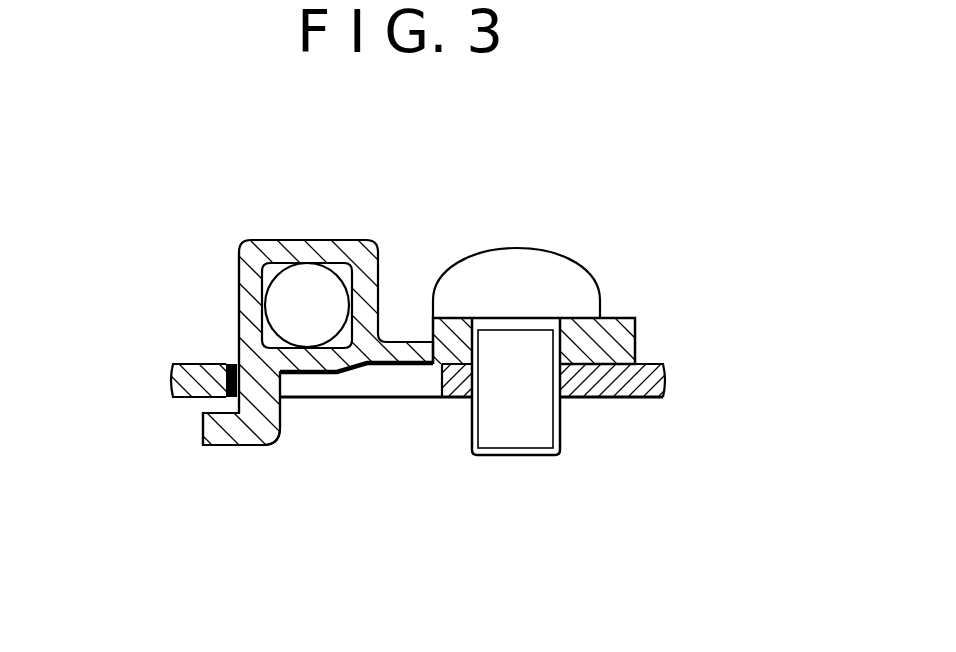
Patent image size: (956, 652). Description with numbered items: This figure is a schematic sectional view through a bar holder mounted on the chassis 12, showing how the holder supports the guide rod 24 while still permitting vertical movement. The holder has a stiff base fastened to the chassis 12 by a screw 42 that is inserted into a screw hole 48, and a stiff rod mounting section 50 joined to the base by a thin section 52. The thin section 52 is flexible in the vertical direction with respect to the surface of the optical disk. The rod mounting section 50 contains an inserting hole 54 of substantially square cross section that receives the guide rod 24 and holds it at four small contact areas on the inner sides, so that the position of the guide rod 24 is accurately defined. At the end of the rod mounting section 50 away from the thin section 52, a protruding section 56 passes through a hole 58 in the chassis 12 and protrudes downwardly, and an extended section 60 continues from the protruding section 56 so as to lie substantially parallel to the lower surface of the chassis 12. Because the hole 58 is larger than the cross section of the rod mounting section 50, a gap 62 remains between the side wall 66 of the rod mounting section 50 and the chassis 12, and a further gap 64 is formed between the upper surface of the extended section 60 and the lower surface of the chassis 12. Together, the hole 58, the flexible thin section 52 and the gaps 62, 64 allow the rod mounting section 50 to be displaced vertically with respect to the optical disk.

The chassis 12 is at (608, 383).
The guide rod 24 is at (310, 293).
The screw 42 is at (557, 285).
The screw hole 48 is at (548, 357).
The rod mounting section 50 is at (366, 252).
The thin section 52 is at (400, 367).
The inserting hole 54 is at (267, 262).
The protruding section 56 is at (262, 425).
The hole 58 is at (333, 385).
The extended section 60 is at (203, 432).
The gap 62 is at (232, 362).
The gap 64 is at (217, 407).
The side wall 66 is at (238, 303).